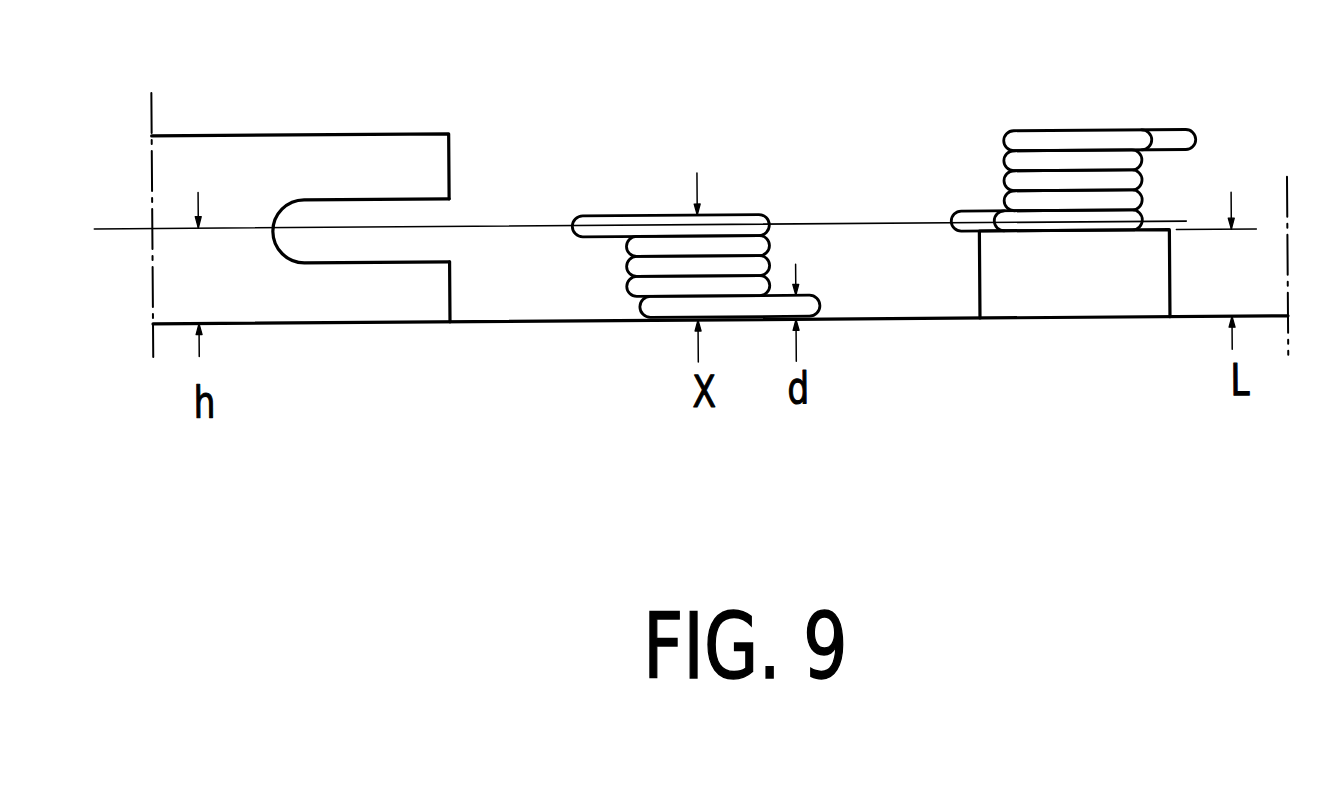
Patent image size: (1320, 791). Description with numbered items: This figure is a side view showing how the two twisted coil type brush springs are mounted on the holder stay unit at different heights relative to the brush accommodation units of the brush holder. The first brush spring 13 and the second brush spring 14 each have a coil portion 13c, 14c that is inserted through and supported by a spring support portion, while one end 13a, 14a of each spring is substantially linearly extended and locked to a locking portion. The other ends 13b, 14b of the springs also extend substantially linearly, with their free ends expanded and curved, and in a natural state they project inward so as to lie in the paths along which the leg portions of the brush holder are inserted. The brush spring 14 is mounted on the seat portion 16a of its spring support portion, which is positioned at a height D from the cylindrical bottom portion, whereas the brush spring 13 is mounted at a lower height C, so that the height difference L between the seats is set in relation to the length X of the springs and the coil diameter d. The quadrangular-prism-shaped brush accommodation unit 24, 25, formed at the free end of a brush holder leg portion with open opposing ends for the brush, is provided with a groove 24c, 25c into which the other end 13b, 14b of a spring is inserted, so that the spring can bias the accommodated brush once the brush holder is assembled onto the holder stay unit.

The first twisted coil type brush spring 13 is at (752, 235).
The end of first brush spring 13a is at (820, 319).
The other end of first brush spring 13b is at (585, 215).
The coil portion of first brush spring 13c is at (647, 298).
The second twisted coil type brush spring 14 is at (1079, 116).
The end of second brush spring 14a is at (1187, 142).
The other end of second brush spring 14b is at (963, 214).
The coil portion of second brush spring 14c is at (1084, 170).
The seat portion of second spring support portion 16a is at (1045, 305).
The brush accommodation unit 24 is at (324, 216).
The brush accommodation unit 25 is at (324, 216).
The groove 24c is at (385, 310).
The groove 25c is at (317, 259).